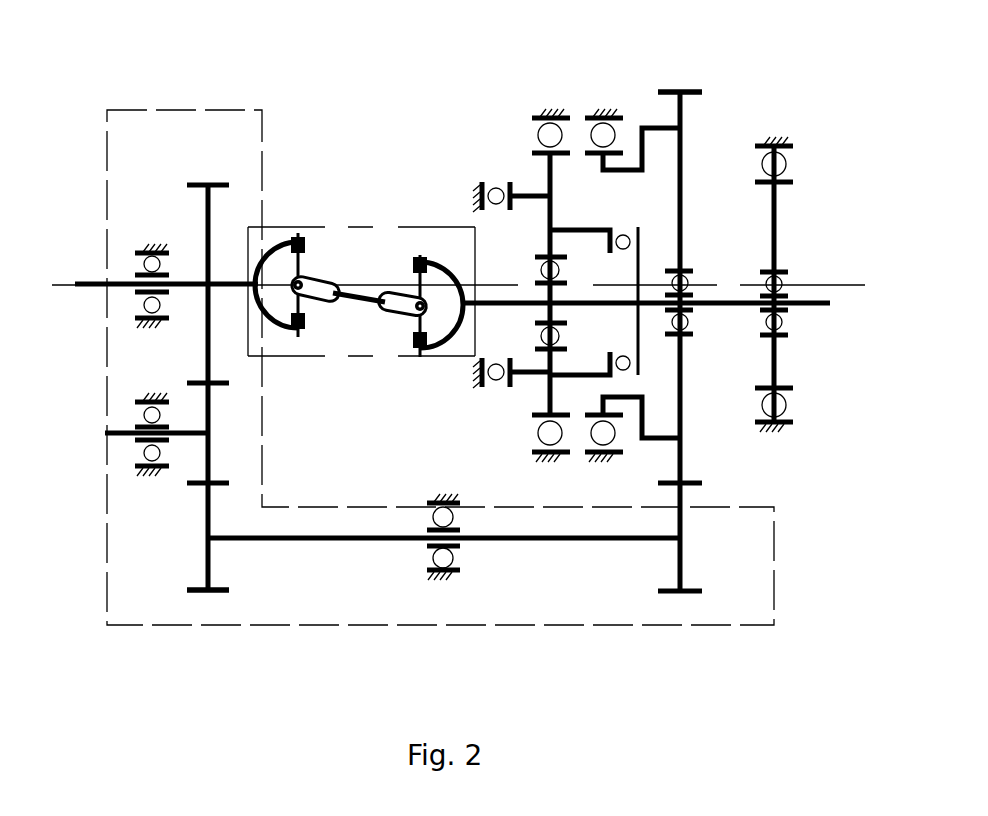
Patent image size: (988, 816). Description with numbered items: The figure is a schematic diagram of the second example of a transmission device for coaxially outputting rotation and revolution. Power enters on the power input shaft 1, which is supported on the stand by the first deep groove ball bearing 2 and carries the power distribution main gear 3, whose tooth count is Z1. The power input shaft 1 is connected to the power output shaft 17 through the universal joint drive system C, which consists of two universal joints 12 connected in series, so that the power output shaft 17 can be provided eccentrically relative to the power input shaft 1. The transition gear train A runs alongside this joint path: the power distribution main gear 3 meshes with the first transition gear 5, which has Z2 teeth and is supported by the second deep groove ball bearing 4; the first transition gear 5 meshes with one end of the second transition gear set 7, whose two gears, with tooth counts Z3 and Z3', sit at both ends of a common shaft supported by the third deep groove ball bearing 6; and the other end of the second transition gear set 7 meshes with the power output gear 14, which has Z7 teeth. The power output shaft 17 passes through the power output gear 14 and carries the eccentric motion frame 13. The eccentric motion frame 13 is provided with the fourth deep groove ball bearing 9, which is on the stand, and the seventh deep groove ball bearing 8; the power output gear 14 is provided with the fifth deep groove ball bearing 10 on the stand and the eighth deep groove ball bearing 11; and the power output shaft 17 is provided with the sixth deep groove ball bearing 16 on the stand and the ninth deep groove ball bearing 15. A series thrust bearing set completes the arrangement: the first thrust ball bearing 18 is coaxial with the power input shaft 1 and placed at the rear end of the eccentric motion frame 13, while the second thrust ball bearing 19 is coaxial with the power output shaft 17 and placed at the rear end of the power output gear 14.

The power input shaft 1 is at (105, 284).
The first deep groove ball bearing 2 is at (150, 250).
The power distribution main gear 3 is at (208, 182).
The second deep groove ball bearing 4 is at (143, 450).
The first transition gear 5 is at (210, 418).
The third deep groove ball bearing 6 is at (442, 520).
The second transition gear set 7 is at (490, 540).
The seventh deep groove ball bearing 8 is at (548, 270).
The fourth deep groove ball bearing 9 is at (548, 118).
The fifth deep groove ball bearing 10 is at (603, 118).
The eighth deep groove ball bearing 11 is at (682, 333).
The universal joint 12 is at (328, 307).
The eccentric motion frame 13 is at (585, 225).
The power output gear 14 is at (677, 128).
The ninth deep groove ball bearing 15 is at (775, 273).
The sixth deep groove ball bearing 16 is at (775, 163).
The power output shaft 17 is at (812, 307).
The first thrust ball bearing 18 is at (495, 190).
The second thrust ball bearing 19 is at (624, 366).
The transition gear train A is at (774, 588).
The universal joint drive system C is at (362, 227).
The number of teeth of the power distribution main gear Z1 is at (205, 310).
The number of teeth of the first transition gear Z2 is at (205, 437).
The number of teeth of the second transition gear meshing with the first transition Z3 is at (173, 584).
The number of teeth of the second transition gear meshing with the internal-external Z3' is at (710, 574).
The number of teeth of the power output gear Z7 is at (680, 101).